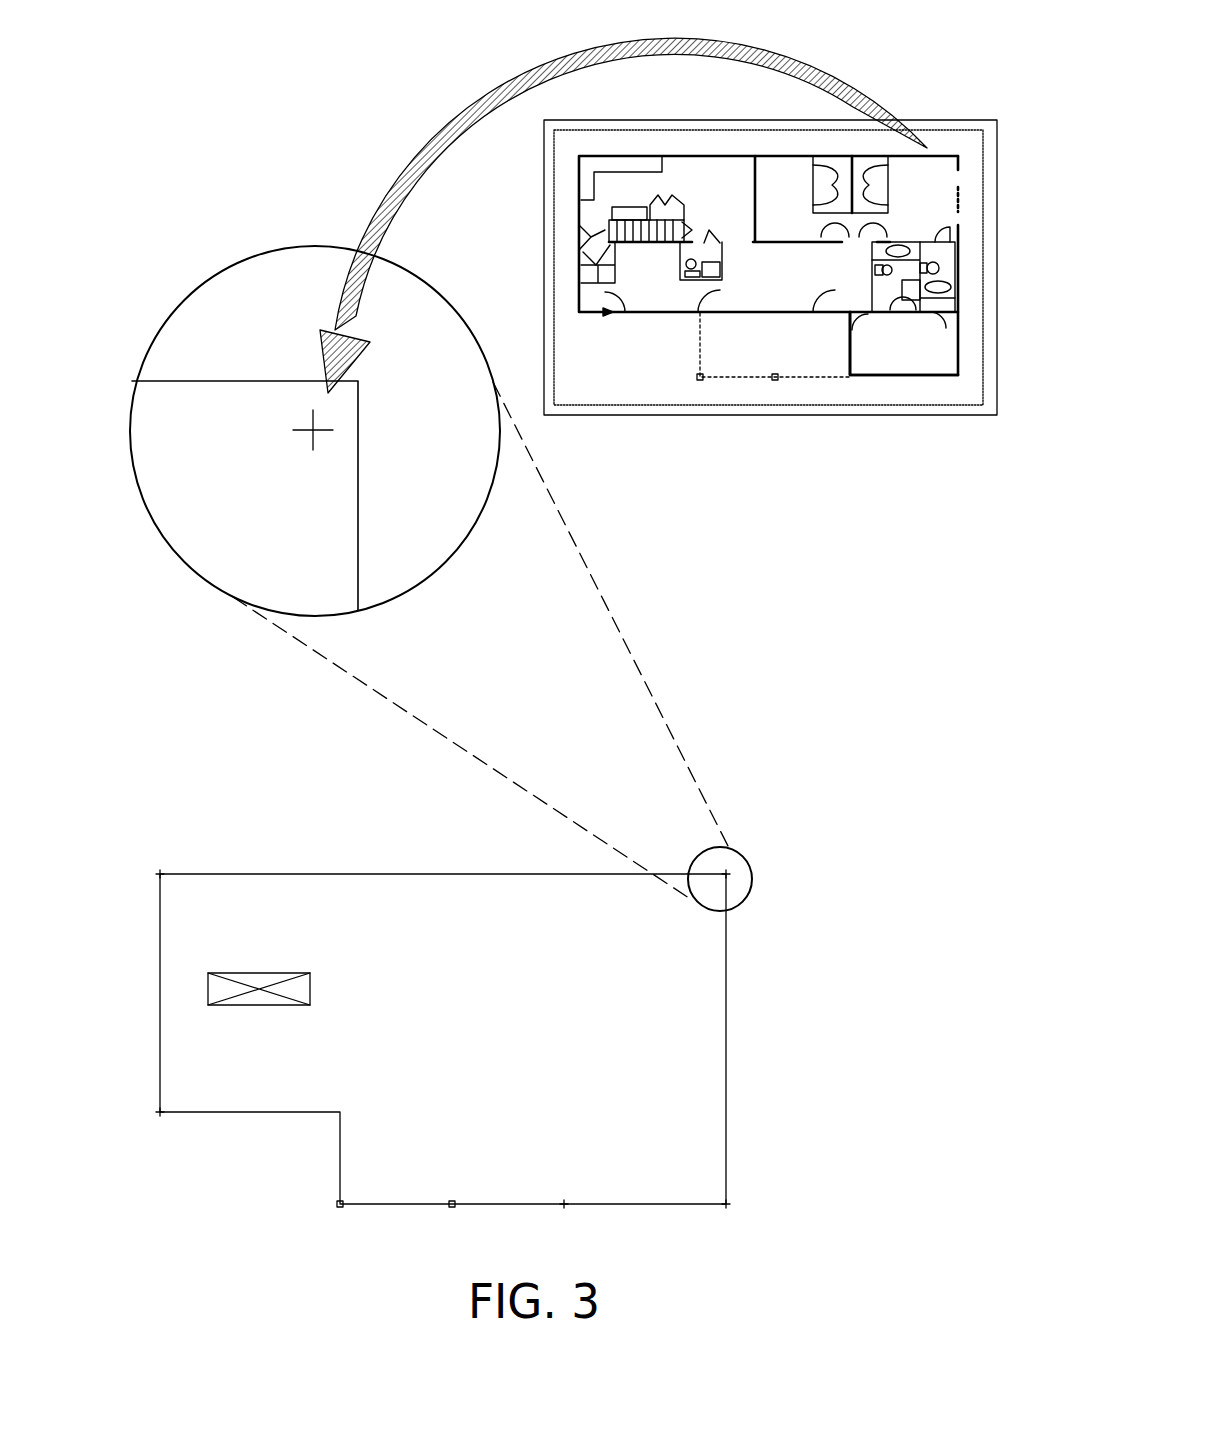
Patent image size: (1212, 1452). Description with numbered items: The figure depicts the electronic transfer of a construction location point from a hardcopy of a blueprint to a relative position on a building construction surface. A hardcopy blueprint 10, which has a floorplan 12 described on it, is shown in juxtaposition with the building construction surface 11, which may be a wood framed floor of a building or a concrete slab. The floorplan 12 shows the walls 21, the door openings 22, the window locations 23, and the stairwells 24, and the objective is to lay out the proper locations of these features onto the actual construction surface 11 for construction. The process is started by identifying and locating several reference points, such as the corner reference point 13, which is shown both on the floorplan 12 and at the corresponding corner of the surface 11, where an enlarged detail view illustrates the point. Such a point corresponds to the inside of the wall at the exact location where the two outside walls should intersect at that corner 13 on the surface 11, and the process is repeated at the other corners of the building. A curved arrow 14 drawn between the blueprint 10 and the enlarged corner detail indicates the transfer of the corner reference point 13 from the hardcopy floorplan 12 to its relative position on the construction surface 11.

The hardcopy blueprint 10 is at (932, 120).
The building construction surface 11 is at (727, 1057).
The floorplan 12 is at (958, 160).
The corner reference point 13 is at (300, 381).
The arrow 14 is at (495, 88).
The walls 21 is at (722, 155).
The door openings 22 is at (822, 314).
The window locations 23 is at (630, 314).
The stairwells 24 is at (628, 222).